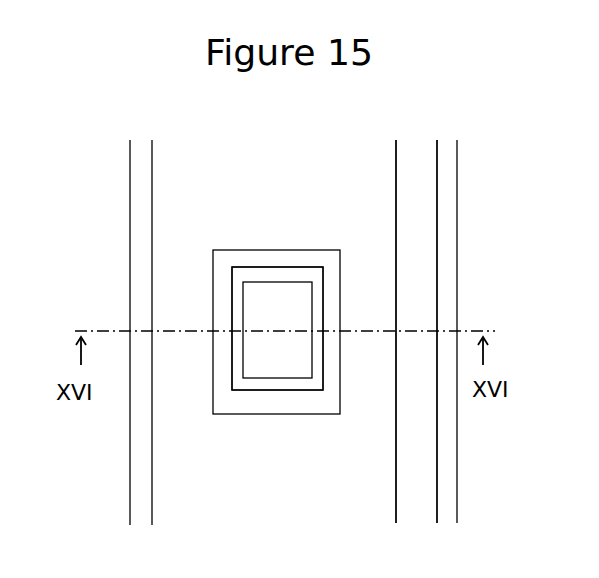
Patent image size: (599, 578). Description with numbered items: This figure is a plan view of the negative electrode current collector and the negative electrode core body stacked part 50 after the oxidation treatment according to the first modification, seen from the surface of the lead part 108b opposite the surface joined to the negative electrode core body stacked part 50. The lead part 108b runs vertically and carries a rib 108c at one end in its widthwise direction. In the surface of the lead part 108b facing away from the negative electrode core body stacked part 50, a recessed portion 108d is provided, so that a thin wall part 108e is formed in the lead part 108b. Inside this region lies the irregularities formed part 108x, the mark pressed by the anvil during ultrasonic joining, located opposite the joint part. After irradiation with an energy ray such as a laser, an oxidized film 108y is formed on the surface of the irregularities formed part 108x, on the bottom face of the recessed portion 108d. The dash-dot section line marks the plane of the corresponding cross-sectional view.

The negative electrode core body stacked part 50 is at (445, 210).
The lead part 108b is at (372, 173).
The rib 108c is at (418, 432).
The recessed portion 108d is at (228, 403).
The thin wall part 108e is at (325, 273).
The irregularities formed part 108x is at (298, 312).
The oxidized film 108y is at (237, 305).